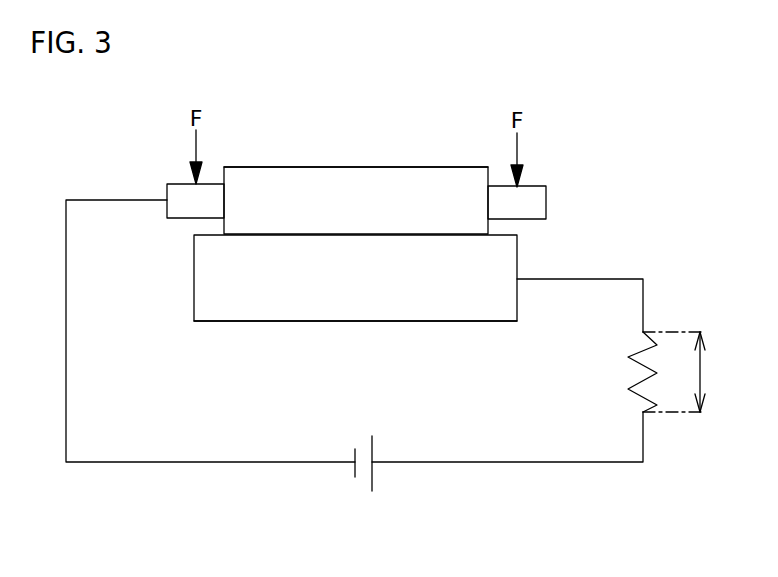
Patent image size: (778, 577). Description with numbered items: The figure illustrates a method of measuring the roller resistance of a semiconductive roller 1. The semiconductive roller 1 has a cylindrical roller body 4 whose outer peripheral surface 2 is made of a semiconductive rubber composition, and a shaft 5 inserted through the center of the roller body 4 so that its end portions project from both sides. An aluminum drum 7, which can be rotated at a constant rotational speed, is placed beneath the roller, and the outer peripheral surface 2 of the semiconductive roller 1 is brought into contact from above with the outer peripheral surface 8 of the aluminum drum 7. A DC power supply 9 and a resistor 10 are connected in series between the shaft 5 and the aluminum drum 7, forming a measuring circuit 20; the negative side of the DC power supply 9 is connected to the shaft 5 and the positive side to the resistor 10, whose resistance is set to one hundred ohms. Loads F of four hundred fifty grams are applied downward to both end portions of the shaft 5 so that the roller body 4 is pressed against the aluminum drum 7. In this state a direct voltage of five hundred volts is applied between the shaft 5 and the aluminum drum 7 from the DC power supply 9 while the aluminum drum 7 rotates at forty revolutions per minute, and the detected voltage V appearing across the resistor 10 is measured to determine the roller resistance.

The semiconductive roller 1 is at (448, 98).
The outer peripheral surface 2 is at (394, 180).
The roller body 4 is at (288, 167).
The shaft 5 is at (533, 203).
The aluminum drum 7 is at (315, 321).
The outer peripheral surface of the aluminum drum 8 is at (380, 298).
The DC power supply 9 is at (363, 487).
The resistor 10 is at (632, 373).
The measuring circuit 20 is at (145, 463).